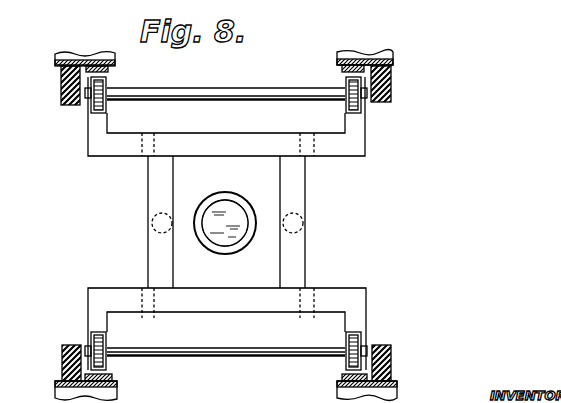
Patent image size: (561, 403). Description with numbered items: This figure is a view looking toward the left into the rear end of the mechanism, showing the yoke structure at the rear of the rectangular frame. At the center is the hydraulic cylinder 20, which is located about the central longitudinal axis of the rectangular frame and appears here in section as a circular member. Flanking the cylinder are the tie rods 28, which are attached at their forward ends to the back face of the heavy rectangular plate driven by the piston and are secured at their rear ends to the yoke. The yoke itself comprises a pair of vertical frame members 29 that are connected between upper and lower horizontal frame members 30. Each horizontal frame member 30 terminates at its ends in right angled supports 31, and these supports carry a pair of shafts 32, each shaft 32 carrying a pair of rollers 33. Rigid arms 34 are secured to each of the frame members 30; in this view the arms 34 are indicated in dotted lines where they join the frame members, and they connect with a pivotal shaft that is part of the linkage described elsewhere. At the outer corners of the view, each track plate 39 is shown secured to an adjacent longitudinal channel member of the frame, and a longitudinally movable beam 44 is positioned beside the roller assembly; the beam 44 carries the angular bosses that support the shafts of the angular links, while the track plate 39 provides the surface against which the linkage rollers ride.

The hydraulic cylinder 20 is at (222, 254).
The tie rods 28 is at (152, 223).
The vertical frame members 29 is at (158, 183).
The horizontal frame members 30 is at (229, 151).
The right angled supports 31 is at (98, 140).
The shafts 32 is at (223, 90).
The rollers 33 is at (100, 87).
The rigid arms 34 is at (147, 133).
The track plate 39 is at (95, 60).
The longitudinally movable beam 44 is at (61, 80).